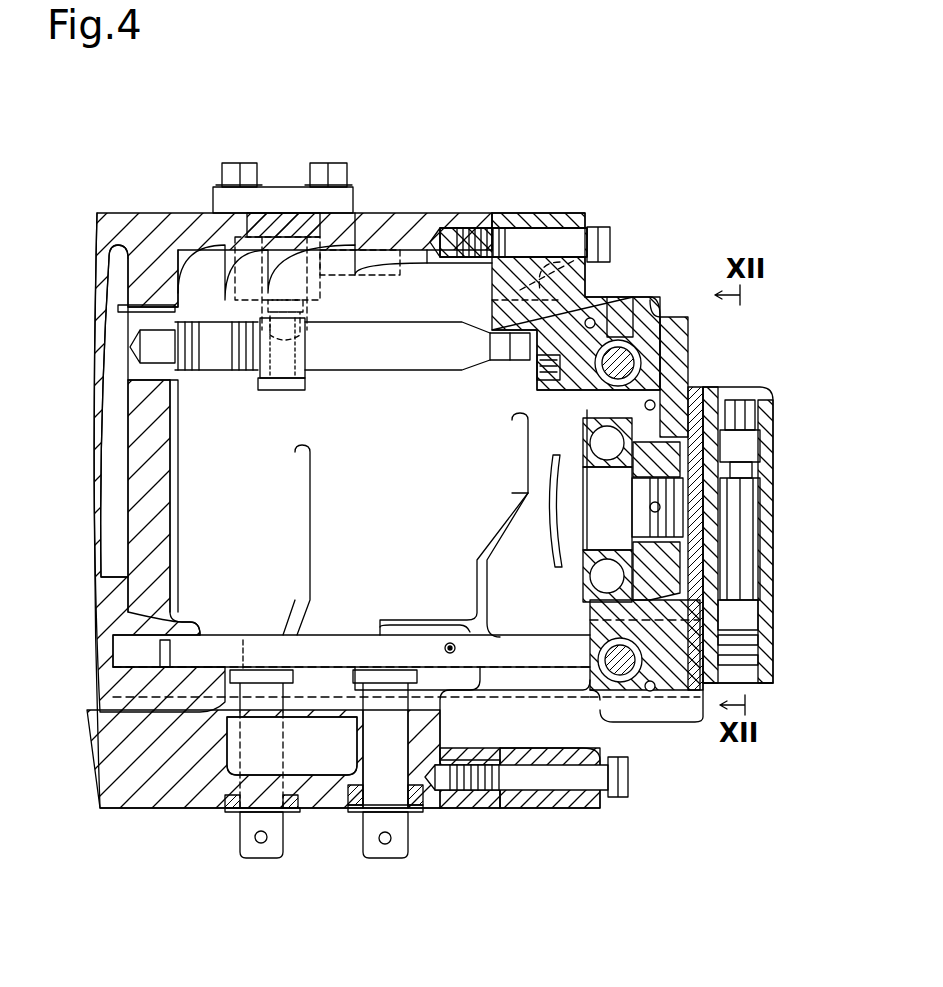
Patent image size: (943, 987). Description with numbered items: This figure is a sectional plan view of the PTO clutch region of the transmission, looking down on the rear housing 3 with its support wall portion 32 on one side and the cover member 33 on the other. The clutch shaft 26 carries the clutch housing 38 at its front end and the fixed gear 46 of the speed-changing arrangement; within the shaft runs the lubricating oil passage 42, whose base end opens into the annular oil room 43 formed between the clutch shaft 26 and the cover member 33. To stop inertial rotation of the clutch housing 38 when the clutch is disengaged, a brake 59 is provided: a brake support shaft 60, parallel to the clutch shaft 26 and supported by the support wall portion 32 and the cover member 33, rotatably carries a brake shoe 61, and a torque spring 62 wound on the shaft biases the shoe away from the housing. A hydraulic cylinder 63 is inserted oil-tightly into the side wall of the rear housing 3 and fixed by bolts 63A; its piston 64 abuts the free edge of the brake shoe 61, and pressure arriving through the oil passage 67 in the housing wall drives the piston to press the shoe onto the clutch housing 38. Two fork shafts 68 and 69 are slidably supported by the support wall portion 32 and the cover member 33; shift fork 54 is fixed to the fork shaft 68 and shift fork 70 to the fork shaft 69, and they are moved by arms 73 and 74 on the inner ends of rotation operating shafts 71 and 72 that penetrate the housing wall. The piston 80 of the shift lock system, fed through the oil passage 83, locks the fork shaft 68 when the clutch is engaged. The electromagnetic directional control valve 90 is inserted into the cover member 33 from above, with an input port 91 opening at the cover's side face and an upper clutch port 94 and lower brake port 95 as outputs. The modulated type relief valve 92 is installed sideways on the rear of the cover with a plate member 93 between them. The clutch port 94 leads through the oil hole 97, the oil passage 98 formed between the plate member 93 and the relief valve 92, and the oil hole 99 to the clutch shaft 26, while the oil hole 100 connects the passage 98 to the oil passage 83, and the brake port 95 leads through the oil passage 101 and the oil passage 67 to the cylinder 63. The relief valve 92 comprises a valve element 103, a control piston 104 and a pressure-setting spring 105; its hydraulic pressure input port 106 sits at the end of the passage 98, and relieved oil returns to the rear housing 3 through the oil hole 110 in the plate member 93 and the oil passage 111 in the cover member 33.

The rear housing 3 is at (420, 240).
The clutch shaft 26 is at (540, 462).
The support wall portion 32 is at (150, 487).
The cover member 33 is at (530, 213).
The clutch housing 38 is at (205, 380).
The lubricating oil passage 42 is at (590, 520).
The annular oil room 43 is at (590, 560).
The gear 46 is at (650, 405).
The shift fork 54 is at (510, 480).
The brake 59 is at (320, 388).
The brake support shaft 60 is at (412, 350).
The brake shoe 61 is at (290, 350).
The torque spring 62 is at (258, 385).
The hydraulic cylinder 63 is at (318, 296).
The bolts 63A is at (315, 165).
The piston 64 is at (290, 290).
The oil passage 67 is at (360, 245).
The fork shaft 68 is at (355, 645).
The fork shaft 69 is at (532, 690).
The shift fork 70 is at (302, 500).
The rotation operating shaft 71 is at (390, 743).
The rotation operating shaft 72 is at (240, 828).
The arm 73 is at (405, 650).
The arm 74 is at (243, 668).
The piston 80 is at (612, 690).
The oil passage 83 is at (595, 615).
The electromagnetic directional control valve 90 is at (620, 300).
The input port 91 is at (560, 225).
The modulated type relief valve 92 is at (770, 685).
The plate member 93 is at (695, 390).
The clutch port 94 is at (648, 310).
The brake port 95 is at (540, 383).
The oil hole 97 is at (720, 400).
The oil passage 98 is at (655, 507).
The oil hole 99 is at (675, 590).
The oil hole 100 is at (692, 660).
The oil passage 101 is at (492, 300).
The valve element 103 is at (765, 440).
The control piston 104 is at (765, 620).
The spring 105 is at (770, 558).
The hydraulic pressure input port 106 is at (745, 410).
The oil hole 110 is at (762, 460).
The oil passage 111 is at (580, 470).